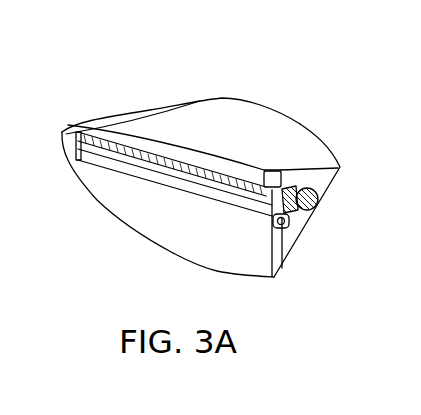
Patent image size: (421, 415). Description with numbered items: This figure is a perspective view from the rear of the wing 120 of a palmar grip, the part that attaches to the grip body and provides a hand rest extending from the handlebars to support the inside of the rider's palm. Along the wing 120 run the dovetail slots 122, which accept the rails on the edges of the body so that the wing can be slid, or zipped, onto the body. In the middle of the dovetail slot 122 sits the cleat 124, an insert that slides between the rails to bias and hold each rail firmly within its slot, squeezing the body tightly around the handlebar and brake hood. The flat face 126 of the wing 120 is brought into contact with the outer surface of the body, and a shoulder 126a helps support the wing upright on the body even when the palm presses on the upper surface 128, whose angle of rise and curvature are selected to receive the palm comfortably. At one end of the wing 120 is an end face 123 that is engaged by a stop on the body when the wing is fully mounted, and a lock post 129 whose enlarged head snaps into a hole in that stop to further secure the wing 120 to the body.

The wing 120 is at (131, 89).
The dovetail slot 122 is at (284, 190).
The end face 123 is at (328, 178).
The cleat 124 is at (142, 170).
The flat face 126 is at (231, 248).
The shoulder 126a is at (173, 253).
The upper surface 128 is at (222, 126).
The lock post 129 is at (319, 201).